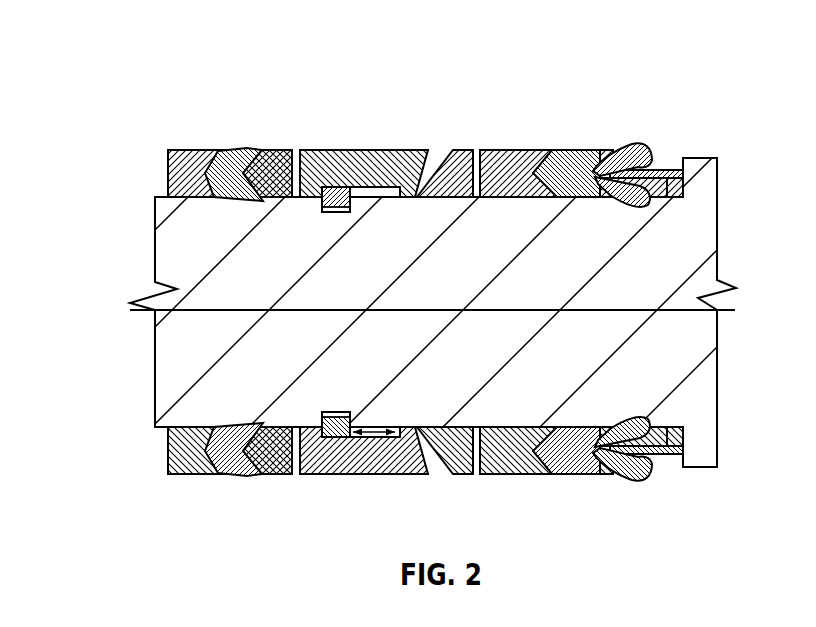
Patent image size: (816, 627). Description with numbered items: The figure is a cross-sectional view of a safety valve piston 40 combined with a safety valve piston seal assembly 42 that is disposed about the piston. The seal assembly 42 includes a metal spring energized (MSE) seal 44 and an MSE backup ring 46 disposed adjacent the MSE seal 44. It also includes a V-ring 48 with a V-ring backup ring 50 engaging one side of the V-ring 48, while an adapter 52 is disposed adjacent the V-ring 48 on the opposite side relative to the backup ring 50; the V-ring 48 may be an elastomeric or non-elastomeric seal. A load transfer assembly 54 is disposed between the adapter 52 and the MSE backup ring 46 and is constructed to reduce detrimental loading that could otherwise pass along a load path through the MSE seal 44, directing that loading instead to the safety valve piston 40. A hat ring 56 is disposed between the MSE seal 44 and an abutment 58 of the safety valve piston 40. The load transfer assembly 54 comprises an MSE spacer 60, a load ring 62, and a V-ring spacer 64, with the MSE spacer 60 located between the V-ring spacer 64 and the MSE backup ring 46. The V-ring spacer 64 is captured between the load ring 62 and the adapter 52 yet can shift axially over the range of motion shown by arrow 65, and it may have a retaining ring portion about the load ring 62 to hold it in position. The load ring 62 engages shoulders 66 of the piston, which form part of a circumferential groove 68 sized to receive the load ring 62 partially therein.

The safety valve piston 40 is at (127, 328).
The safety valve piston seal assembly 42 is at (127, 468).
The metal spring energized (MSE) seal 44 is at (583, 150).
The MSE backup ring 46 is at (564, 103).
The V-ring 48 is at (237, 150).
The V-ring backup ring 50 is at (192, 105).
The adapter 52 is at (358, 126).
The load transfer assembly 54 is at (388, 162).
The hat ring 56 is at (647, 145).
The abutment 58 is at (667, 168).
The MSE spacer 60 is at (452, 196).
The load ring 62 is at (336, 234).
The V-ring spacer 64 is at (325, 150).
The arrow 65 is at (373, 427).
The shoulders 66 is at (322, 204).
The groove 68 is at (323, 222).